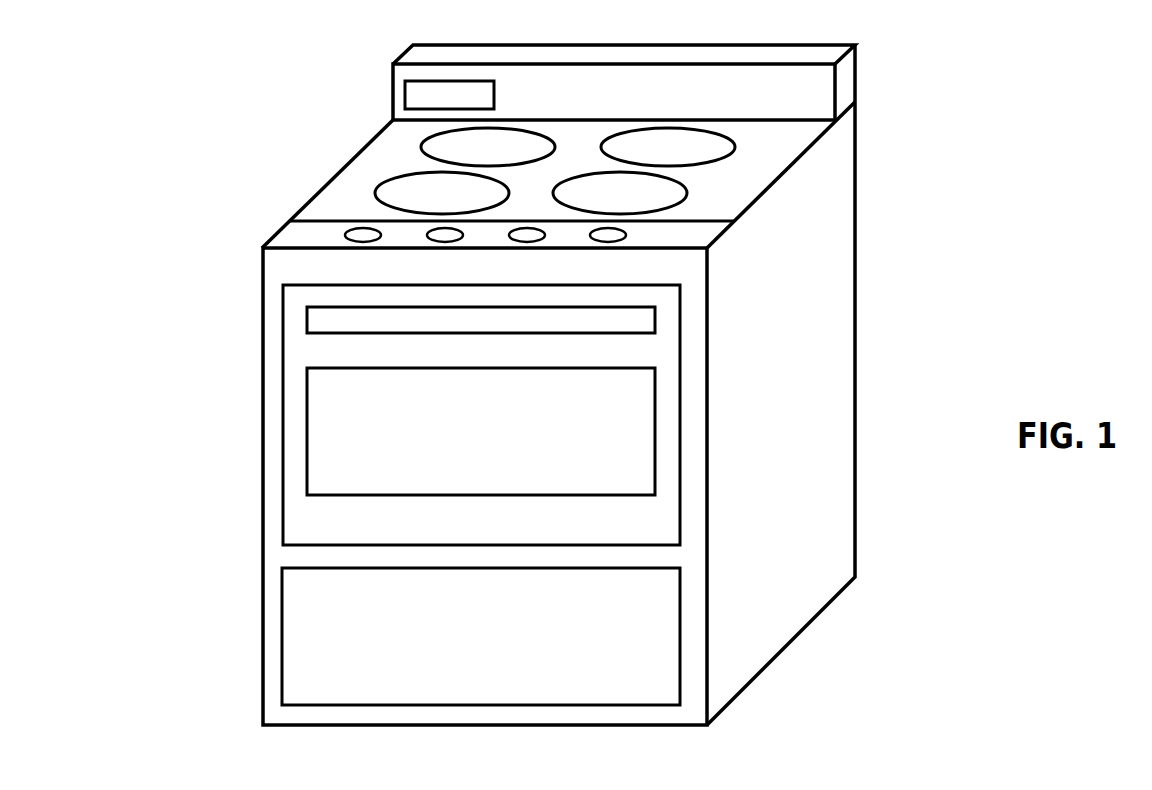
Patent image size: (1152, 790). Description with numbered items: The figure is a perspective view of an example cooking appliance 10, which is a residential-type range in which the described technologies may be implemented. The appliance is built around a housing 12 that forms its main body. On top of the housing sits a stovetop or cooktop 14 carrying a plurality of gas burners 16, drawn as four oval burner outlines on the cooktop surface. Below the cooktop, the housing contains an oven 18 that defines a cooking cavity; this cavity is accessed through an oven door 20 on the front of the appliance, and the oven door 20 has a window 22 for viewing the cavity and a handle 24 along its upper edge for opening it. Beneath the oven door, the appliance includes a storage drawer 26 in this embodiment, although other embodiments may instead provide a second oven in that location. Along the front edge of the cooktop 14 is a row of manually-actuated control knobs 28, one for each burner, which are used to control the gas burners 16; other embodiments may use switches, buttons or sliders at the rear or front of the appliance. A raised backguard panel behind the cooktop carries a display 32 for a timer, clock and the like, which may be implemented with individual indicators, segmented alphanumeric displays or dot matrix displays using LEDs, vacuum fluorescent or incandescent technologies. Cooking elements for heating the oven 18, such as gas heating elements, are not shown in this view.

The cooking appliance 10 is at (240, 158).
The housing 12 is at (260, 678).
The cooktop 14 is at (758, 178).
The gas burners 16 is at (407, 175).
The oven 18 is at (498, 433).
The oven door 20 is at (283, 462).
The window 22 is at (632, 447).
The handle 24 is at (657, 313).
The storage drawer 26 is at (665, 597).
The control knobs 28 is at (359, 227).
The display 32 is at (437, 82).